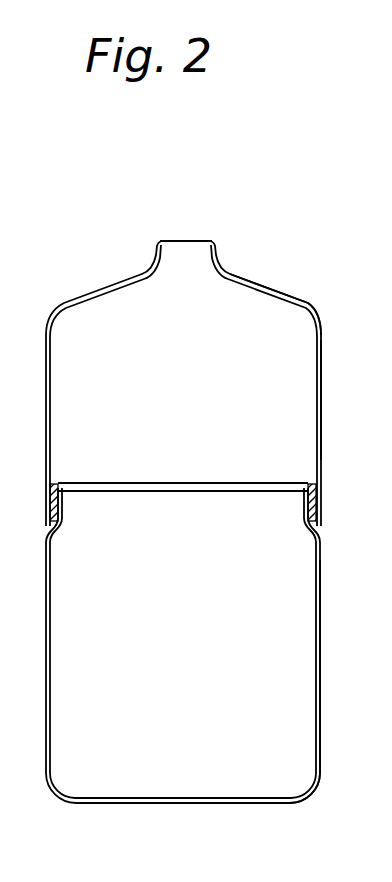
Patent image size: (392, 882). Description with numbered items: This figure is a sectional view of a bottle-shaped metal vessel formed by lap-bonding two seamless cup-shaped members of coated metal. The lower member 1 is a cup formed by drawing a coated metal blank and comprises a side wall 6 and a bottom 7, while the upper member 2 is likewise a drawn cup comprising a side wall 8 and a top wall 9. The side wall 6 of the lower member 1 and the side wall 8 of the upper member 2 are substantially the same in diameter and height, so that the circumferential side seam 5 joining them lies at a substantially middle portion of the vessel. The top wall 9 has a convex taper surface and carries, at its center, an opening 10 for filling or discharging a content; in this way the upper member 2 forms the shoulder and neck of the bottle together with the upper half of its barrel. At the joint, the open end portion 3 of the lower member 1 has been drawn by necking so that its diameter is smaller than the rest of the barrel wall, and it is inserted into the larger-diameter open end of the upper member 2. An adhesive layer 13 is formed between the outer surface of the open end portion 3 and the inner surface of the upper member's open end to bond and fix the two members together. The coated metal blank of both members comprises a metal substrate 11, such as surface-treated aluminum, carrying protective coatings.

The lower member 1 is at (193, 625).
The upper member 2 is at (190, 400).
The open end portion of the lower member 3 is at (182, 521).
The circumferential side seam 5 is at (44, 512).
The side wall of the lower member 6 is at (320, 660).
The bottom 7 is at (197, 804).
The side wall of the upper member 8 is at (321, 388).
The top wall 9 is at (276, 287).
The opening 10 is at (190, 240).
The metal substrate 11 is at (318, 447).
The adhesive layer 13 is at (50, 492).